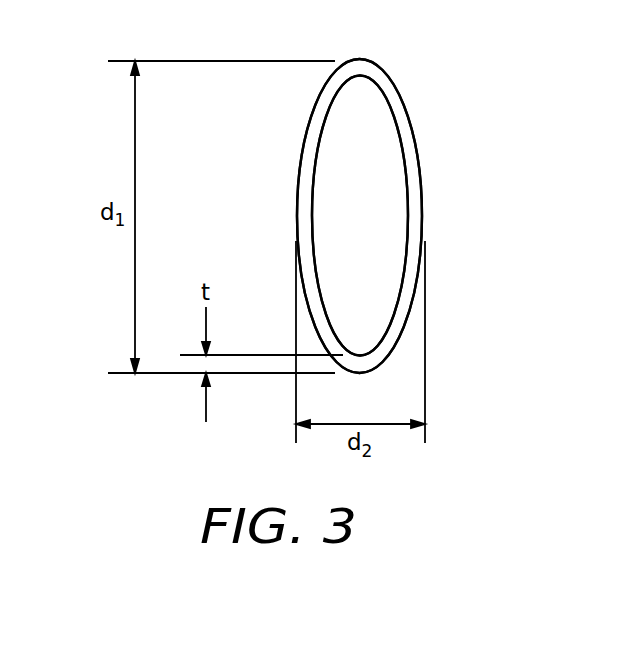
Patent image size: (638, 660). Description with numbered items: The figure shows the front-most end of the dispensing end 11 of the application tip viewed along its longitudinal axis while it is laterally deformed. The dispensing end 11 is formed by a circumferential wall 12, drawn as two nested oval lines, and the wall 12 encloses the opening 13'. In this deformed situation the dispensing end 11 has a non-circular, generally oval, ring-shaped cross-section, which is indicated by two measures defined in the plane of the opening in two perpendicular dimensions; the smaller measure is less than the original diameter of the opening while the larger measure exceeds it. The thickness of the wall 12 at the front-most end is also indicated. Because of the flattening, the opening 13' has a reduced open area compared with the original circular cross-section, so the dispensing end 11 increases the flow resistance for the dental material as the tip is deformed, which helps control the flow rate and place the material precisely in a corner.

The dispensing end 11 is at (415, 218).
The circumferential wall 12 is at (410, 292).
The opening 13' is at (399, 216).